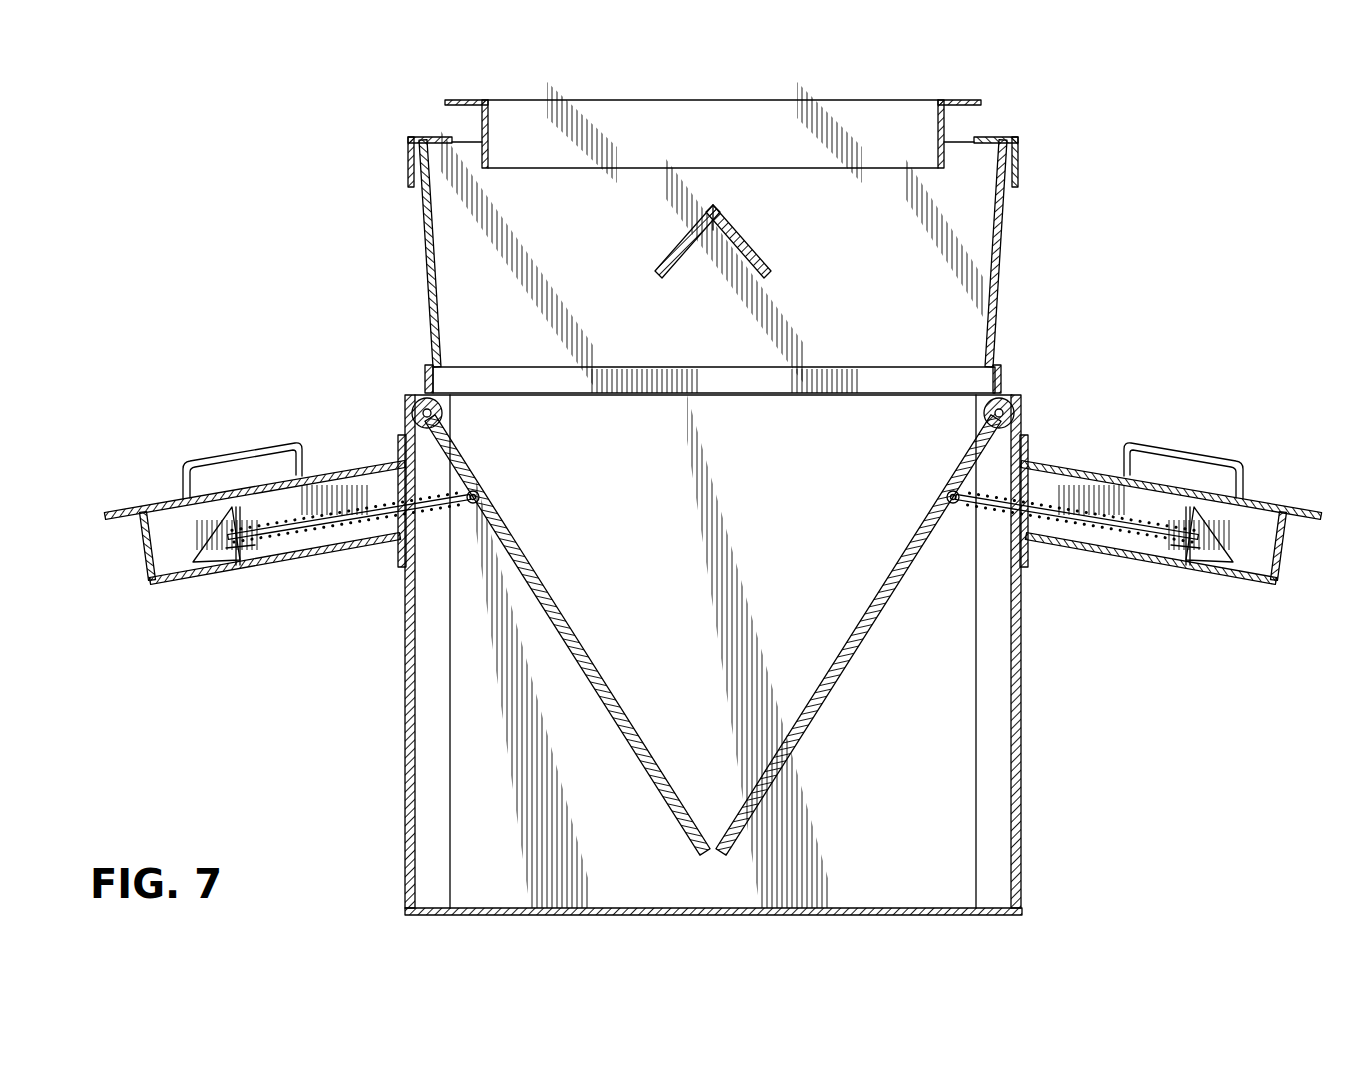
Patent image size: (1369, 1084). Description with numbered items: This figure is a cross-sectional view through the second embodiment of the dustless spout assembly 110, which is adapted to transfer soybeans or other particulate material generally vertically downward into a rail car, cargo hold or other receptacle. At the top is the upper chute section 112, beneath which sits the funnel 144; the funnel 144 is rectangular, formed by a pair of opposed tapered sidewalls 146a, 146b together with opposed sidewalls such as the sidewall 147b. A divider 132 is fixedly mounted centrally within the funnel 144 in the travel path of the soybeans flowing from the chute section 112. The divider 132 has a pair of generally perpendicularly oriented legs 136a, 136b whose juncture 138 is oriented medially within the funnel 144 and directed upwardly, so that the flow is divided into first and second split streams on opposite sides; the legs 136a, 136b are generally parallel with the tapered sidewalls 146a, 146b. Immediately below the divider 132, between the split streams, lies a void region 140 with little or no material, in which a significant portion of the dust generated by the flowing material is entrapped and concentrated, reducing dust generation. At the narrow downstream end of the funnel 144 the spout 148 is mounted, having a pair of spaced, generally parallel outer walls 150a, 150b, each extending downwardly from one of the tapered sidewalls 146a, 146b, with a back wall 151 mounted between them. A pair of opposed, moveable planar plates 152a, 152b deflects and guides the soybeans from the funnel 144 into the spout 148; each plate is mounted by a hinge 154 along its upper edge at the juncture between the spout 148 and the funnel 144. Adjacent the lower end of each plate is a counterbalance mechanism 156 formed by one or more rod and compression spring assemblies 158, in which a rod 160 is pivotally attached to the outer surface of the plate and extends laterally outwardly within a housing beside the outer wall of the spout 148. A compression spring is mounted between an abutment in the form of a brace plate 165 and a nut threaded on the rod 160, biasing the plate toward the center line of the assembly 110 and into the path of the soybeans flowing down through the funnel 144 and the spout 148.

The dustless spout assembly 110 is at (380, 130).
The upper chute section 112 is at (947, 113).
The divider 132 is at (710, 251).
The leg of divider 136a is at (666, 265).
The leg of divider 136b is at (752, 258).
The juncture 138 is at (716, 212).
The void region 140 is at (725, 290).
The funnel 144 is at (420, 268).
The tapered sidewall 146a is at (421, 223).
The tapered sidewall 146b is at (1004, 243).
The sidewall 147b is at (552, 224).
The spout 148 is at (404, 717).
The outer wall 150a is at (405, 672).
The outer wall 150b is at (1022, 746).
The back wall 151 is at (728, 578).
The moveable plate 152a is at (558, 581).
The moveable plate 152b is at (806, 716).
The hinge 154 is at (424, 413).
The counterbalance mechanism 156 is at (118, 505).
The rod and compression spring assembly 158 is at (322, 540).
The rod 160 is at (256, 552).
The brace plate 165 is at (212, 575).